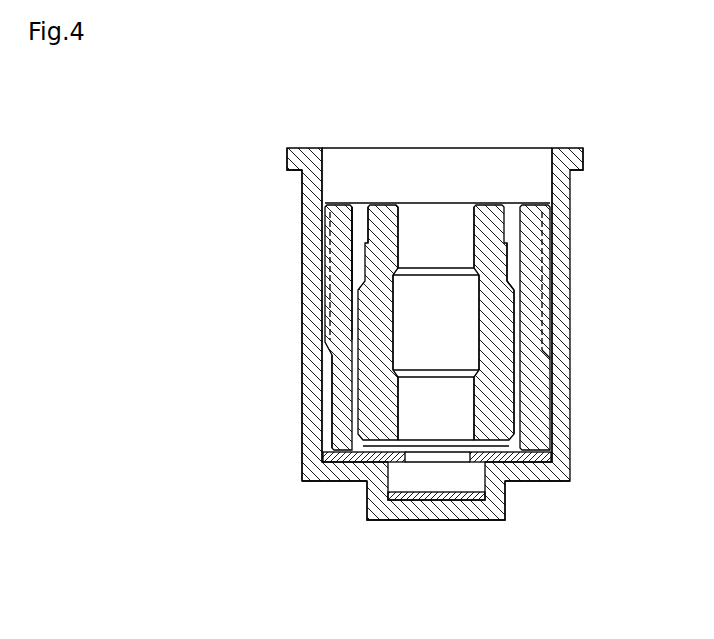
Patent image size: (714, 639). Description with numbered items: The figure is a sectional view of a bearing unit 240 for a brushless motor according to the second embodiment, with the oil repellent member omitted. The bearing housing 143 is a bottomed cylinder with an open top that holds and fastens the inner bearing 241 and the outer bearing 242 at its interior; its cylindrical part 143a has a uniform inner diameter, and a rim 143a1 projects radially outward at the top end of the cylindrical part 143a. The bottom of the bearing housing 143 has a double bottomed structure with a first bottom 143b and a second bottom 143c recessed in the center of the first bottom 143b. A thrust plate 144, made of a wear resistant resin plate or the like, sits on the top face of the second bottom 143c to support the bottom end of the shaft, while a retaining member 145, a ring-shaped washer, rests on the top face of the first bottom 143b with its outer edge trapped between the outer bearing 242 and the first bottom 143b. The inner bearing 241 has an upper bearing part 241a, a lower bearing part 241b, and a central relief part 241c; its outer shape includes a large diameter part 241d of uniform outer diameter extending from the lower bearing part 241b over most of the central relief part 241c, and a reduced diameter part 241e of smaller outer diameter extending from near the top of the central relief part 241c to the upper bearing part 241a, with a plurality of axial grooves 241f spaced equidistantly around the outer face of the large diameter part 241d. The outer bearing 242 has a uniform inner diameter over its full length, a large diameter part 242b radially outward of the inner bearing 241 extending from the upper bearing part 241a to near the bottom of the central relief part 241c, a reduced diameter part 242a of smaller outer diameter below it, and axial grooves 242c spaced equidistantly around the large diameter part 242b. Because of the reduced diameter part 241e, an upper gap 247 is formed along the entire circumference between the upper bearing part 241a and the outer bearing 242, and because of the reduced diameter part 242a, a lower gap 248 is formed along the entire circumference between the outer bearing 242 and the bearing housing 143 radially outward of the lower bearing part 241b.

The bearing unit 240 is at (552, 122).
The bearing housing 143 is at (291, 211).
The cylindrical part 143a is at (566, 237).
The rim 143a1 is at (585, 158).
The first bottom 143b is at (534, 478).
The second bottom 143c is at (463, 515).
The lower gap 248 is at (318, 412).
The retaining member 145 is at (325, 456).
The thrust plate 144 is at (385, 494).
The outer bearing 242 is at (532, 196).
The reduced diameter part 242a is at (342, 400).
The large diameter part 242b is at (350, 276).
The grooves 242c is at (333, 293).
The inner bearing 241 is at (488, 196).
The upper bearing part 241a is at (434, 232).
The lower bearing part 241b is at (438, 420).
The central relief part 241c is at (447, 323).
The large diameter part 241d is at (507, 387).
The reduced diameter part 241e is at (488, 254).
The grooves 241f is at (543, 343).
The upper gap 247 is at (360, 230).